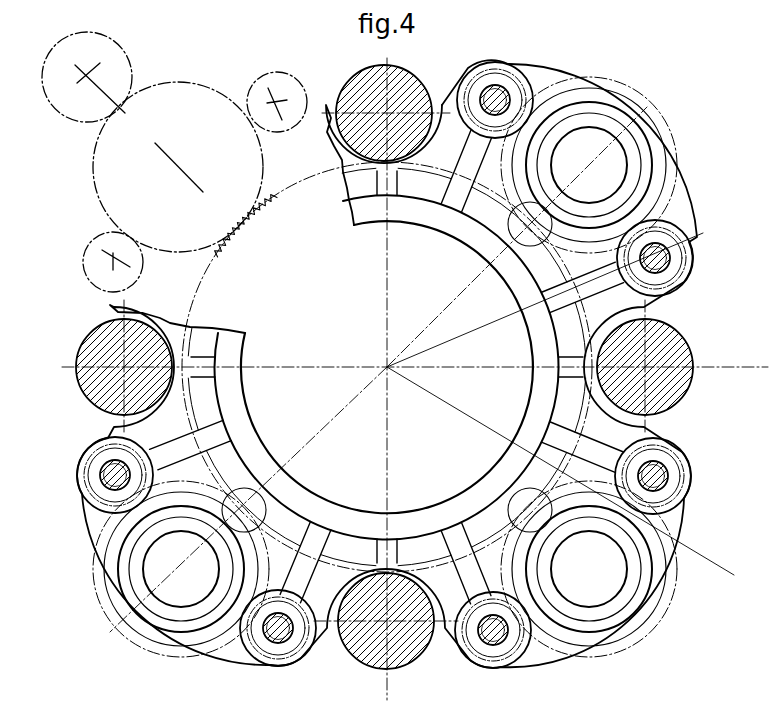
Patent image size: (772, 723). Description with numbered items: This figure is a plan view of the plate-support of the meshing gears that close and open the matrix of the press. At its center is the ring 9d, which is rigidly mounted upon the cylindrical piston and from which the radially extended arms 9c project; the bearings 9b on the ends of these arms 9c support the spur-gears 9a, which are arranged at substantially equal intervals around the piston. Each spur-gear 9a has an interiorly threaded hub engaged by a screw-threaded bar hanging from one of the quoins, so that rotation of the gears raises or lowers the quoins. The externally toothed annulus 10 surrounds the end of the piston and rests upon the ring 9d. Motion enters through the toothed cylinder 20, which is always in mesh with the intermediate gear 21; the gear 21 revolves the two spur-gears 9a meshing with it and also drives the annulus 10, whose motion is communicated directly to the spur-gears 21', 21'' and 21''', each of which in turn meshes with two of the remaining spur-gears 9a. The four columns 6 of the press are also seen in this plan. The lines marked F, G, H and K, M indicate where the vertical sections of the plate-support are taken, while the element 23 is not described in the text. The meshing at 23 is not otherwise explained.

The column 6 is at (384, 367).
The spur-gear 9a is at (500, 72).
The bearing 9b is at (385, 365).
The radially extended arm 9c is at (215, 366).
The ring 9d is at (477, 239).
The externally toothed annulus 10 is at (265, 196).
The toothed cylinder 20 is at (87, 77).
The intermediate gear 21 is at (178, 167).
The spur-gear 21' is at (181, 569).
The spur-gear 21'' is at (589, 569).
The spur-gear 21''' is at (598, 165).
The broken edge 23 is at (239, 241).
The section line point G is at (510, 379).
The section line point K is at (410, 365).
The section line point H is at (550, 291).
The section line point M is at (560, 471).
The section line point F is at (238, 501).